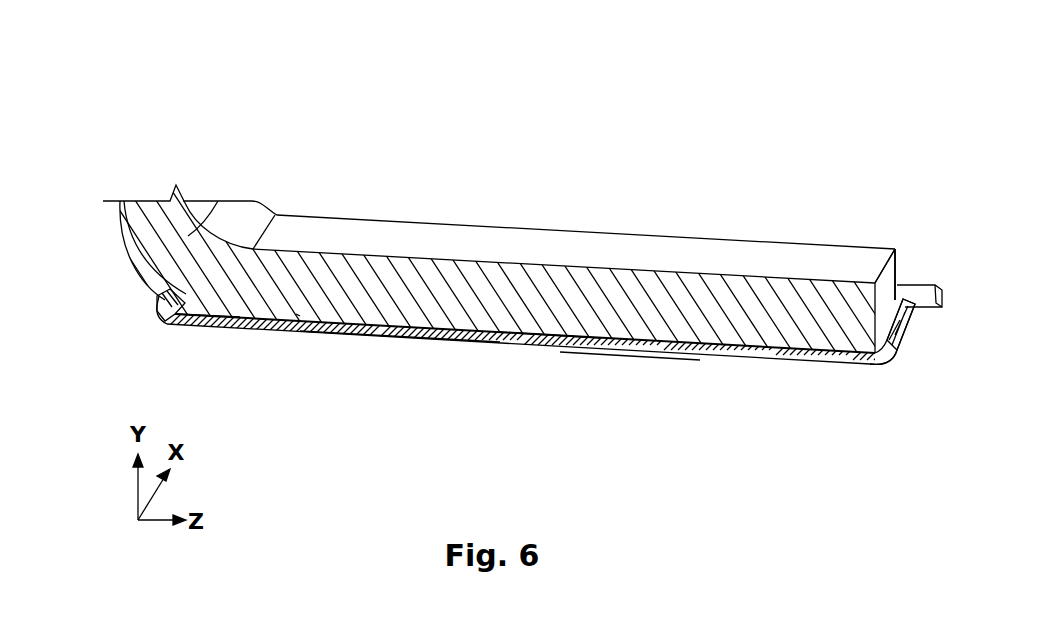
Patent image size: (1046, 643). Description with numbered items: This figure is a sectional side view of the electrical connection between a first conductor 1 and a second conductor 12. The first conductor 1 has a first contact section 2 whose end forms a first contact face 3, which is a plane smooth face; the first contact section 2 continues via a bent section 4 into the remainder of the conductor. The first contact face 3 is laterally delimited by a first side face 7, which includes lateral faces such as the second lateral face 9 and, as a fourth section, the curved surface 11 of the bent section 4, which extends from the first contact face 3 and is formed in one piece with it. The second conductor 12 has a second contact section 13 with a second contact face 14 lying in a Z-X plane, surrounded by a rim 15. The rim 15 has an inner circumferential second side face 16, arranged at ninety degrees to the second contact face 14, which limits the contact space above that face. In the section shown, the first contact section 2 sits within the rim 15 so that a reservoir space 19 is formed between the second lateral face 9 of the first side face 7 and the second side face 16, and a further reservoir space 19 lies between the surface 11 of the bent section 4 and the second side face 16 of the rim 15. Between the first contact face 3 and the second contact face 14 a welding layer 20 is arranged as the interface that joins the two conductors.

The first conductor 1 is at (329, 172).
The first contact section 2 is at (493, 237).
The first contact face 3 is at (446, 326).
The bent section 4 is at (218, 201).
The first side face 7 is at (902, 260).
The second lateral face 9 is at (908, 278).
The surface 11 is at (208, 313).
The second conductor 12 is at (400, 362).
The second contact section 13 is at (616, 343).
The second contact face 14 is at (300, 316).
The rim 15 is at (157, 318).
The second side face 16 is at (165, 295).
The reservoir space 19 is at (186, 294).
The welding layer 20 is at (523, 332).